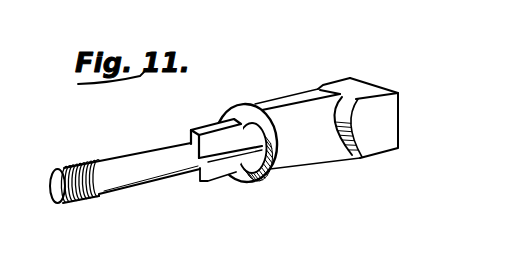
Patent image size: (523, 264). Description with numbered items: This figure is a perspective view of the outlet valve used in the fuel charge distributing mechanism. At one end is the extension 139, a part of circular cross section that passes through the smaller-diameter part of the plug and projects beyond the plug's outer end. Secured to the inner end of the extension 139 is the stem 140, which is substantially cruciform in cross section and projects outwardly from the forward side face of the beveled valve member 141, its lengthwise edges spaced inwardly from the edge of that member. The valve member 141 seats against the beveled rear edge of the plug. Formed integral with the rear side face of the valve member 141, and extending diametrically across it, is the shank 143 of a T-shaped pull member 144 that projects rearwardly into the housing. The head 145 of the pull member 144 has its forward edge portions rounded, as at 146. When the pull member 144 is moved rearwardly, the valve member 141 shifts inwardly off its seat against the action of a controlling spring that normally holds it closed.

The extension 139 is at (140, 168).
The stem 140 is at (228, 158).
The beveled valve member 141 is at (234, 104).
The shank 143 is at (305, 150).
The T-shaped pull member 144 is at (298, 92).
The head 145 is at (376, 126).
The rounded forward edge portions 146 is at (347, 130).